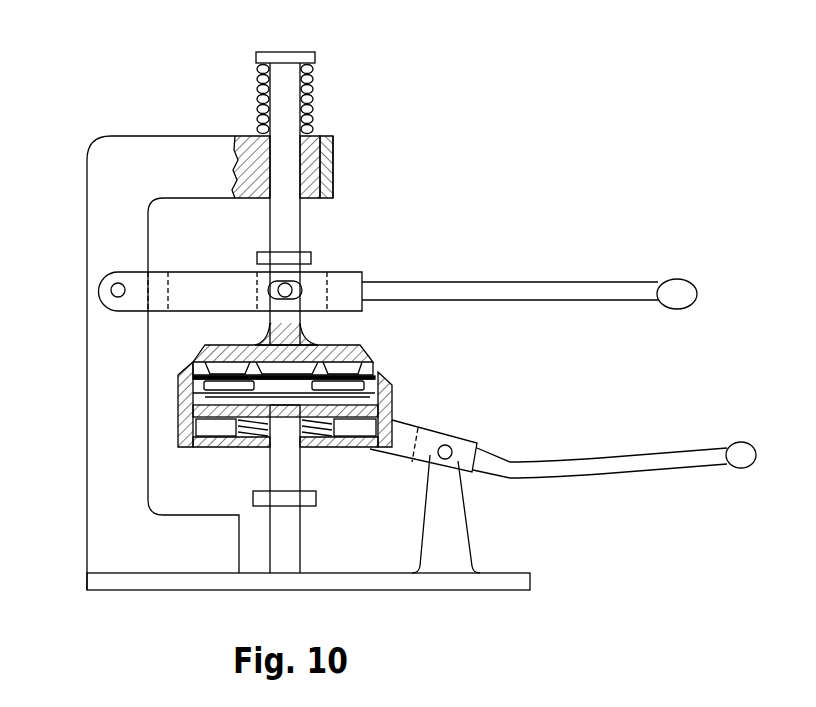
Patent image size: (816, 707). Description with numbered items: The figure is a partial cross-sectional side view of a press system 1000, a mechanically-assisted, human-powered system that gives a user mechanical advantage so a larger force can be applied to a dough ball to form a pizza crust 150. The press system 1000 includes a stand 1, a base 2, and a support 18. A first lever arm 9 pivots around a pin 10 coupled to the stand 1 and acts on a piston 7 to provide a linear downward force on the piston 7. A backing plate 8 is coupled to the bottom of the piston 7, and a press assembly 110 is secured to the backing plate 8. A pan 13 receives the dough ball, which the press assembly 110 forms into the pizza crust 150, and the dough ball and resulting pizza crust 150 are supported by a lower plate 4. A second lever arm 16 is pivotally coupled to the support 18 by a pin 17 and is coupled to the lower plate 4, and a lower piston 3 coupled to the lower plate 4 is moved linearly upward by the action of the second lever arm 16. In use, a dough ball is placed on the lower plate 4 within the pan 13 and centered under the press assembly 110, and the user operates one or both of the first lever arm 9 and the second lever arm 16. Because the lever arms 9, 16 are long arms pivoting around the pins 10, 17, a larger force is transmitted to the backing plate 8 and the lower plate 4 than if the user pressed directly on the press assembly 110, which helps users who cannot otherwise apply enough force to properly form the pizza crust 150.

The press system 1000 is at (510, 97).
The stand 1 is at (105, 243).
The base 2 is at (512, 585).
The lower piston 3 is at (285, 537).
The lower plate 4 is at (207, 420).
The piston 7 is at (286, 90).
The backing plate 8 is at (365, 346).
The first lever arm 9 is at (555, 290).
The pin 10 is at (108, 297).
The pan 13 is at (182, 412).
The second lever arm 16 is at (611, 456).
The pin 17 is at (430, 474).
The support 18 is at (459, 512).
The press assembly 110 is at (364, 361).
The pizza crust 150 is at (373, 395).